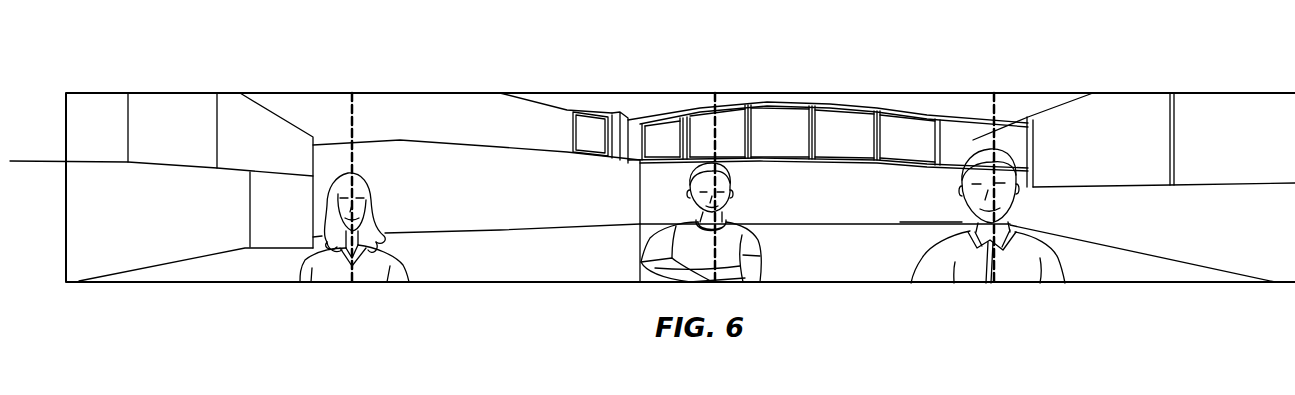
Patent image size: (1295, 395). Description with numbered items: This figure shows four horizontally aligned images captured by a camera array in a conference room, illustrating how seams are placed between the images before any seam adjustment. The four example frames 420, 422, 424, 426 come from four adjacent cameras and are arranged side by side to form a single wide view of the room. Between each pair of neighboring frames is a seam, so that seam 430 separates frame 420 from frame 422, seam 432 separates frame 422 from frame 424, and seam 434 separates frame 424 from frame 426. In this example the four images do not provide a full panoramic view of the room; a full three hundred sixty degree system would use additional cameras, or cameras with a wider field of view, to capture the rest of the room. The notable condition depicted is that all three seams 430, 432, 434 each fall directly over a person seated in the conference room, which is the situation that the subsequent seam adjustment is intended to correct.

The frame 420 is at (155, 93).
The frame 422 is at (472, 93).
The frame 424 is at (887, 93).
The frame 426 is at (1165, 93).
The seam 430 is at (352, 102).
The seam 432 is at (715, 102).
The seam 434 is at (994, 103).